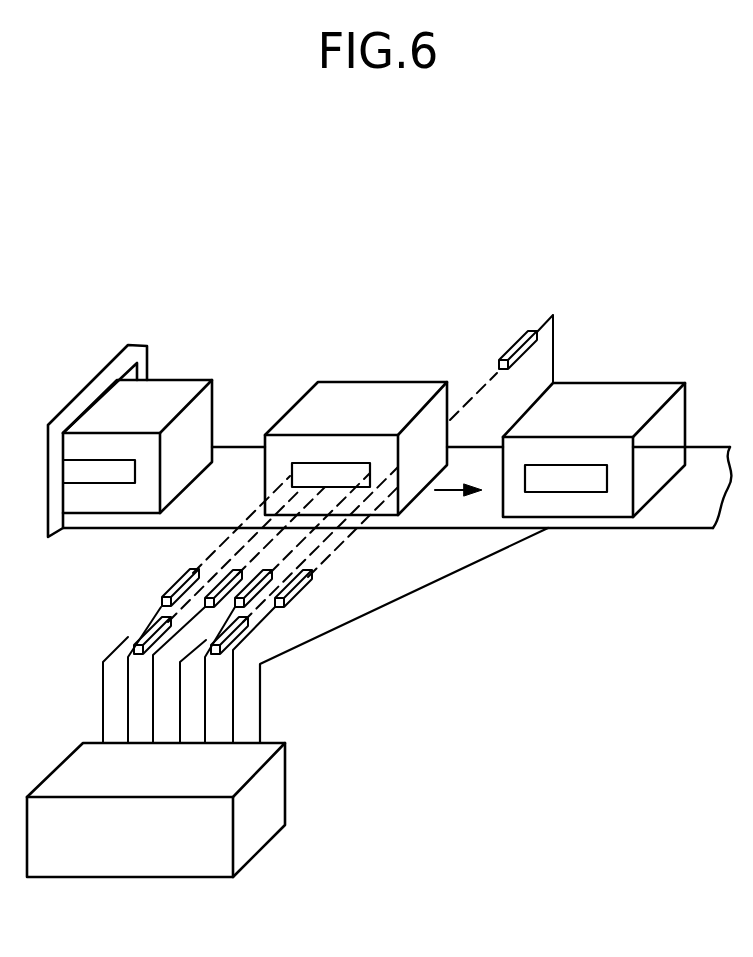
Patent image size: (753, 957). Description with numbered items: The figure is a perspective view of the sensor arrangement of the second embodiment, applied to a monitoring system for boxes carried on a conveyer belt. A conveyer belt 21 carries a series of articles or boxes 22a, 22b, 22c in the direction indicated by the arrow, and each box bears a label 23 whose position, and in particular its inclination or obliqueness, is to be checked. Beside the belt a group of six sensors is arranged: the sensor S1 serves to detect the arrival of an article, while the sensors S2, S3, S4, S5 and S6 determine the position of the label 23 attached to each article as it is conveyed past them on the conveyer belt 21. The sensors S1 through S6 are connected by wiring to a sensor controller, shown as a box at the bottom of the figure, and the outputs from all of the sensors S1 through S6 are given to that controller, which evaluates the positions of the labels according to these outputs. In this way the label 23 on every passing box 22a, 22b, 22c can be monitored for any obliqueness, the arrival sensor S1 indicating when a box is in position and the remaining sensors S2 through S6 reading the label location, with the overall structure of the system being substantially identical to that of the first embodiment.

The conveyer belt 21 is at (690, 520).
The article (box) 22a is at (173, 378).
The article (box) 22b is at (372, 381).
The article (box) 22c is at (630, 383).
The label 23 is at (102, 475).
The sensor S1 is at (299, 590).
The sensor S2 is at (162, 582).
The sensor S3 is at (305, 568).
The sensor S4 is at (236, 646).
The sensor S5 is at (128, 636).
The sensor S6 is at (212, 590).